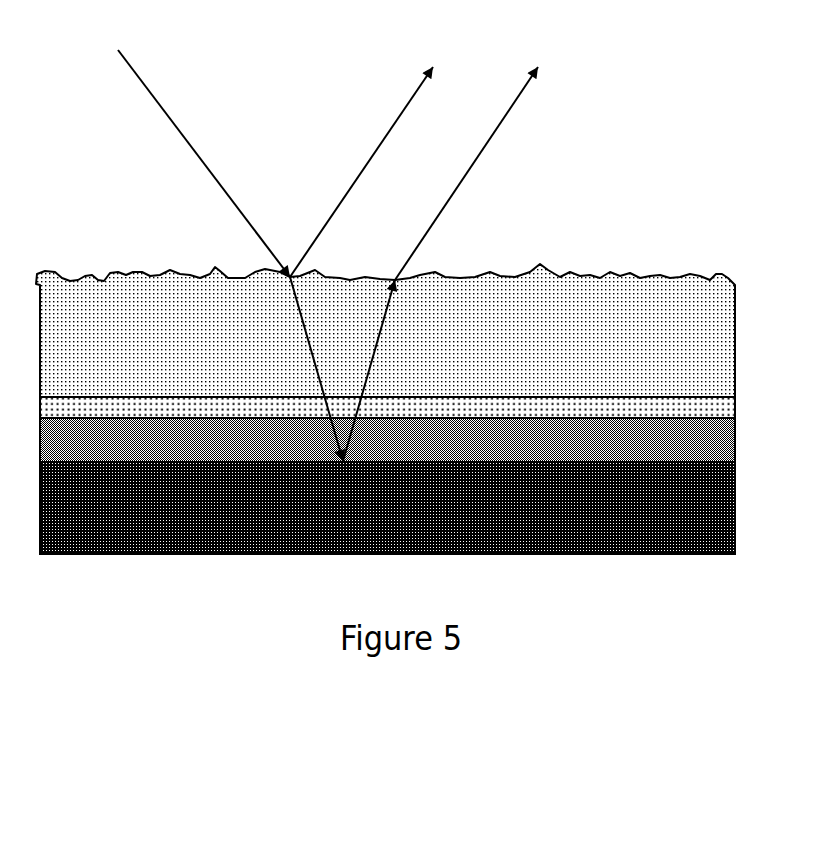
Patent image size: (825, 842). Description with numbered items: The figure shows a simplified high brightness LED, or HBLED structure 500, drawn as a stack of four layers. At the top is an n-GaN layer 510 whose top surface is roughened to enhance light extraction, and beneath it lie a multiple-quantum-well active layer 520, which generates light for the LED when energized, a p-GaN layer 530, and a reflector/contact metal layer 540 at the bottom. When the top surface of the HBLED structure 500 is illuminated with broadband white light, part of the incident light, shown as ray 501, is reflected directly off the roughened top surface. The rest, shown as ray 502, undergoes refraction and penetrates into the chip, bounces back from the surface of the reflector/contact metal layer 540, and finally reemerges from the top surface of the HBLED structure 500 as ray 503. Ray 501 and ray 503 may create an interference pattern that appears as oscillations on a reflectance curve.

The HBLED structure 500 is at (417, 304).
The ray 501 is at (275, 163).
The ray 502 is at (282, 369).
The ray 503 is at (476, 264).
The n-GaN layer 510 is at (417, 330).
The multiple-quantum-well (MQW) active layer 520 is at (419, 410).
The p-GaN layer 530 is at (419, 440).
The reflector/contact metal layer 540 is at (419, 508).